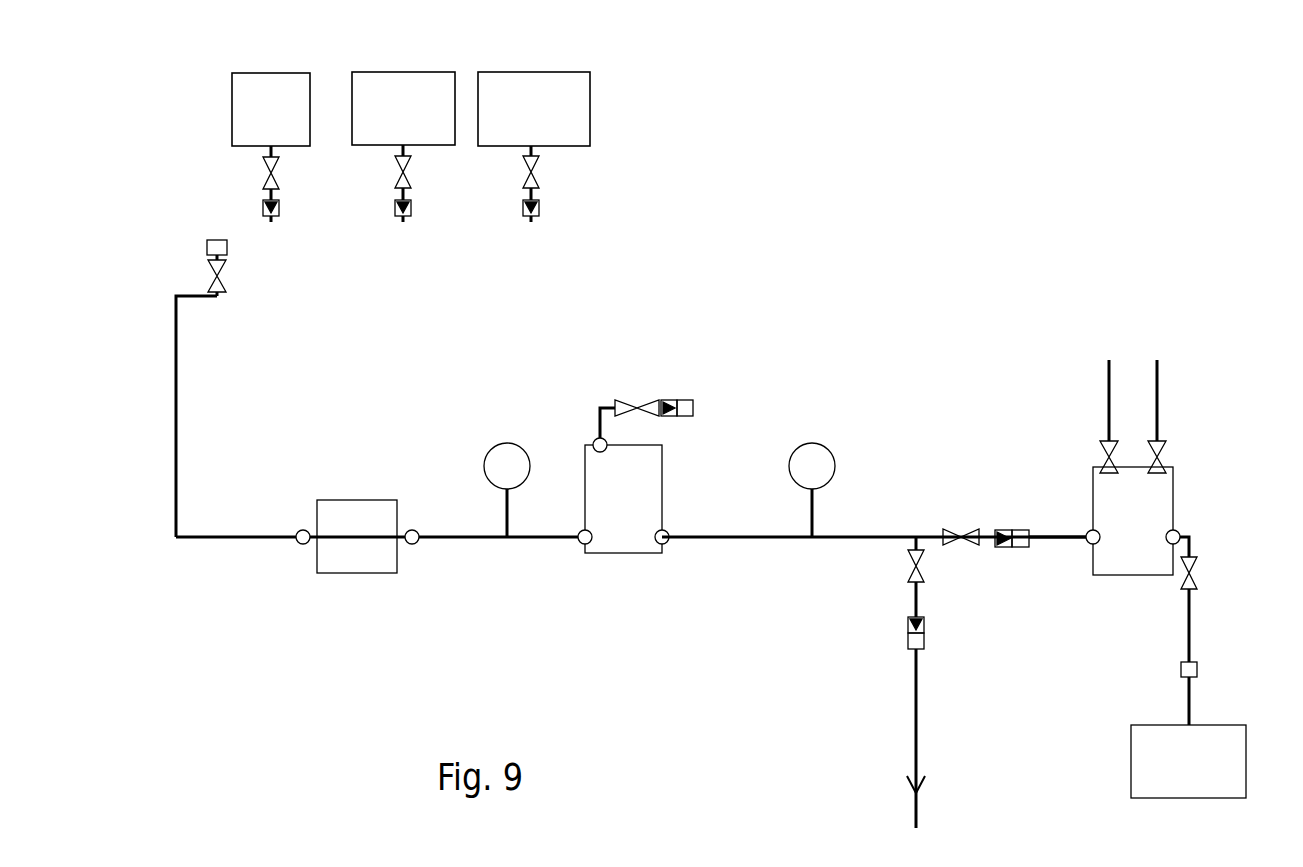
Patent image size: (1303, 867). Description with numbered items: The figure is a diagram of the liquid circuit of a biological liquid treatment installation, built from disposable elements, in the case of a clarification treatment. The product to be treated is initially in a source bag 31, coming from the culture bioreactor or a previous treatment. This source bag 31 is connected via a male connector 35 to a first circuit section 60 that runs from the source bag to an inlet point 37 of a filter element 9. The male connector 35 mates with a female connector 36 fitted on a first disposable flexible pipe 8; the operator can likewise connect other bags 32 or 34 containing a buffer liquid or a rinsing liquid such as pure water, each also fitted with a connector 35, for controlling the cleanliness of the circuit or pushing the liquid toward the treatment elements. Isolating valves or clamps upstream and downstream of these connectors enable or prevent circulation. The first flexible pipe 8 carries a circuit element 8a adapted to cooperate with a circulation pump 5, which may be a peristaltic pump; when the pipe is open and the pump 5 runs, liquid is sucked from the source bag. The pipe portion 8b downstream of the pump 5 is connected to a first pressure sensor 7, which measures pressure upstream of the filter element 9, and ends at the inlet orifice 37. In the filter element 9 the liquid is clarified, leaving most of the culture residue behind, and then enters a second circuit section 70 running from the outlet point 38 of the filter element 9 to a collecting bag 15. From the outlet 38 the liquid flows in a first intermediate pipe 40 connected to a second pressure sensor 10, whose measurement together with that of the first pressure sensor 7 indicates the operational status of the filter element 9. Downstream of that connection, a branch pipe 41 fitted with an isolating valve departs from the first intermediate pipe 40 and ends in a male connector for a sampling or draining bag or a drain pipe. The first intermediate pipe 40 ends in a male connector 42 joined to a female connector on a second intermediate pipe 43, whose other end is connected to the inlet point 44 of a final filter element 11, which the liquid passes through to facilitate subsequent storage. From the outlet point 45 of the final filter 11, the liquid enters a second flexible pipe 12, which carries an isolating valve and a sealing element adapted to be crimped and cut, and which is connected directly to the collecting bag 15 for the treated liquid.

The circulation pump 5 is at (357, 566).
The first pressure sensor 7 is at (490, 447).
The first disposable flexible pipe 8 is at (178, 416).
The circuit element 8a is at (360, 533).
The first flexible pipe downstream of the circulation pump 8b is at (442, 533).
The filter element 9 is at (622, 543).
The second pressure sensor 10 is at (833, 451).
The final filter element 11 is at (1167, 487).
The second flexible pipe 12 is at (1190, 628).
The collecting bag 15 is at (1233, 753).
The source bag 31 is at (535, 72).
The bag containing buffer liquid 32 is at (405, 72).
The bag containing rinsing liquid 34 is at (275, 72).
The male connector 35 is at (271, 217).
The female connector 36 is at (217, 240).
The inlet point of the filter element 37 is at (580, 545).
The outlet point of the filter element 38 is at (669, 544).
The first intermediate pipe 40 is at (788, 540).
The branch pipe 41 is at (912, 597).
The male connector 42 is at (1007, 548).
The second intermediate pipe 43 is at (1057, 543).
The inlet point of the final filter element 44 is at (1087, 532).
The outlet point of the final filter 45 is at (1178, 532).
The first circuit section 60 is at (302, 673).
The second circuit section 70 is at (797, 702).